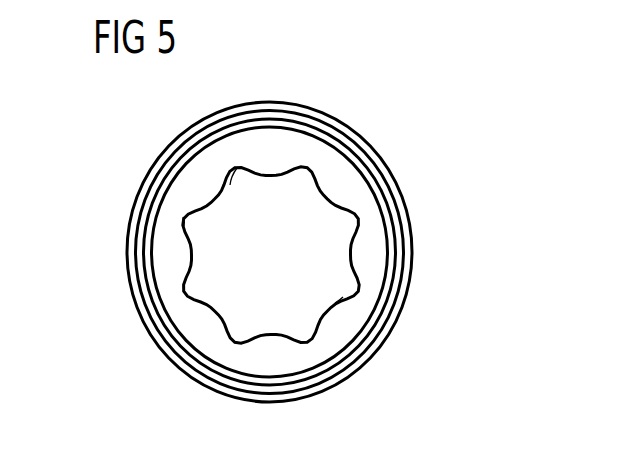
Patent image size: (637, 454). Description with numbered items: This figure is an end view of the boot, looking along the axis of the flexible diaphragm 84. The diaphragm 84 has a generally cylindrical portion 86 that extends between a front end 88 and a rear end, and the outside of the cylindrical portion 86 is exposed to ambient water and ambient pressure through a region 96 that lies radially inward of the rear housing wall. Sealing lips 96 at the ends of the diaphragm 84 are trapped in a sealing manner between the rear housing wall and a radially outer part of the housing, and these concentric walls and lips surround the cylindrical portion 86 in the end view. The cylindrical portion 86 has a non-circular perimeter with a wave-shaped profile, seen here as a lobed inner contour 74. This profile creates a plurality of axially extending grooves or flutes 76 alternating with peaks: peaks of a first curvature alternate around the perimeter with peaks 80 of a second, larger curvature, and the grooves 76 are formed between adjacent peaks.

The inner contour 74 is at (215, 195).
The grooves 76 is at (237, 168).
The peaks of second curvature 80 is at (183, 216).
The flexible diaphragm 84 is at (398, 123).
The cylindrical portion 86 is at (337, 305).
The front end 88 is at (413, 253).
The sealing lips 96 is at (399, 205).